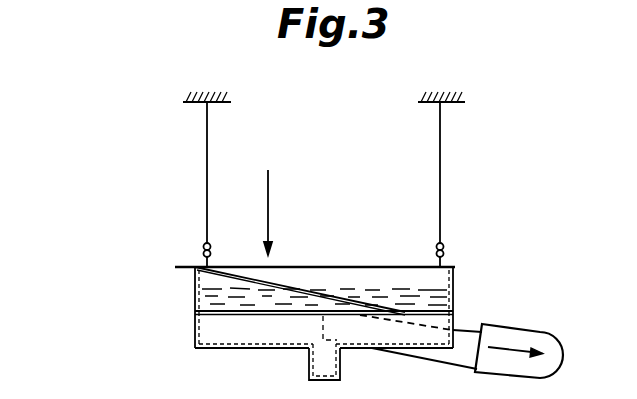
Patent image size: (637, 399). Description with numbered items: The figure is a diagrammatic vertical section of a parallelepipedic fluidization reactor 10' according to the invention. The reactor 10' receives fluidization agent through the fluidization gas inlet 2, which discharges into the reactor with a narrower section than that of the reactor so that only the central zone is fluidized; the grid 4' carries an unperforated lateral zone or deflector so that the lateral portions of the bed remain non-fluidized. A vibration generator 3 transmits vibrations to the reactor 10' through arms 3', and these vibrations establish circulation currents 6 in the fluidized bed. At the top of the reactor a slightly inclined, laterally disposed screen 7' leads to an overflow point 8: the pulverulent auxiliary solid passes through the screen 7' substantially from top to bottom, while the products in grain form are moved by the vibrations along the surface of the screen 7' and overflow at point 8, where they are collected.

The fluidization gas inlet 2 is at (309, 366).
The vibration generator 3 is at (514, 361).
The arms 3' is at (432, 323).
The grid 4' is at (324, 351).
The circulation currents 6 is at (288, 302).
The screen 7' is at (300, 271).
The overflow point 8 is at (177, 273).
The reactor 10' is at (343, 292).